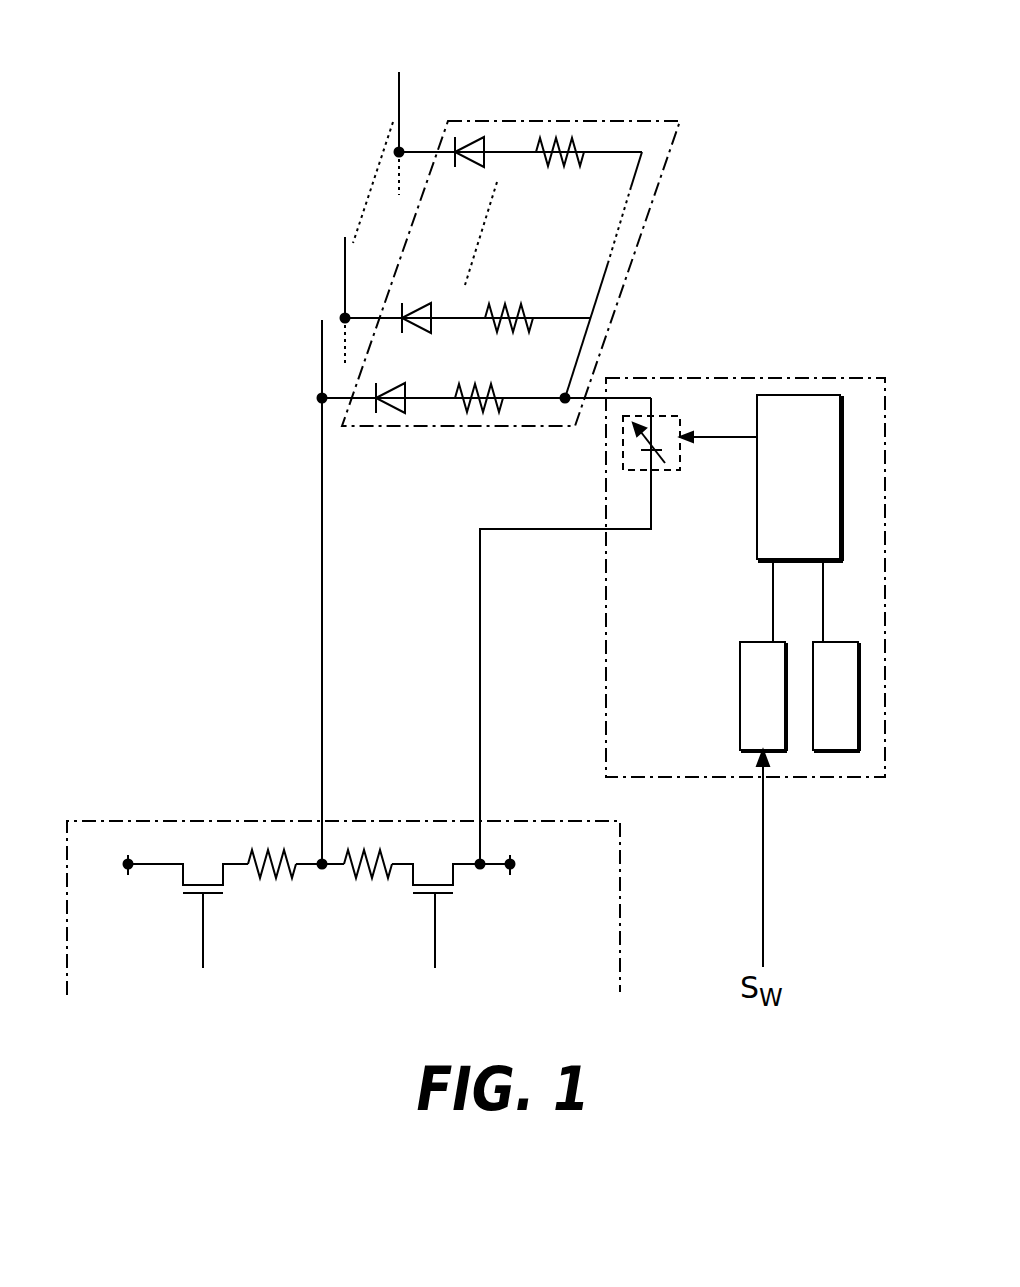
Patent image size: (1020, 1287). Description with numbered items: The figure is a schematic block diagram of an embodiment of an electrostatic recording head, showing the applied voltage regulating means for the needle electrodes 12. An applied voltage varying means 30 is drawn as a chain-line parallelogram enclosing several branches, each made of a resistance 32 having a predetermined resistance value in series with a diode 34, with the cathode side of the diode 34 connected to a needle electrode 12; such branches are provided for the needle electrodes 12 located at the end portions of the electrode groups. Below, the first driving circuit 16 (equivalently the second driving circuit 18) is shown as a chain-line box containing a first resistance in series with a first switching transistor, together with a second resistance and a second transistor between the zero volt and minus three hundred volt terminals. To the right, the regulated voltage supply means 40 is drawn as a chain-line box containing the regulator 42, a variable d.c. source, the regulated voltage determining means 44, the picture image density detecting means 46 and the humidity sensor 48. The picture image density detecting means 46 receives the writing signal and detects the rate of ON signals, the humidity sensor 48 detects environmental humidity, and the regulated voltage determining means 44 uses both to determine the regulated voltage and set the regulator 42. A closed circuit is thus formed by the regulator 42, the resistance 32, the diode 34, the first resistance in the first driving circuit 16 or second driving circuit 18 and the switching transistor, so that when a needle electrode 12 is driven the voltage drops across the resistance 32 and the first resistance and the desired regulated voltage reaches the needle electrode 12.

The needle electrode 12 is at (322, 362).
The first driving circuit 16 is at (181, 820).
The second driving circuit 18 is at (343, 908).
The applied voltage varying means 30 is at (622, 120).
The resistance 32 is at (490, 413).
The diode 34 is at (404, 413).
The regulated voltage supply means 40 is at (814, 378).
The regulator 42 is at (680, 470).
The regulated voltage determining means 44 is at (762, 545).
The picture image density detecting means 46 is at (742, 656).
The humidity sensor 48 is at (851, 655).